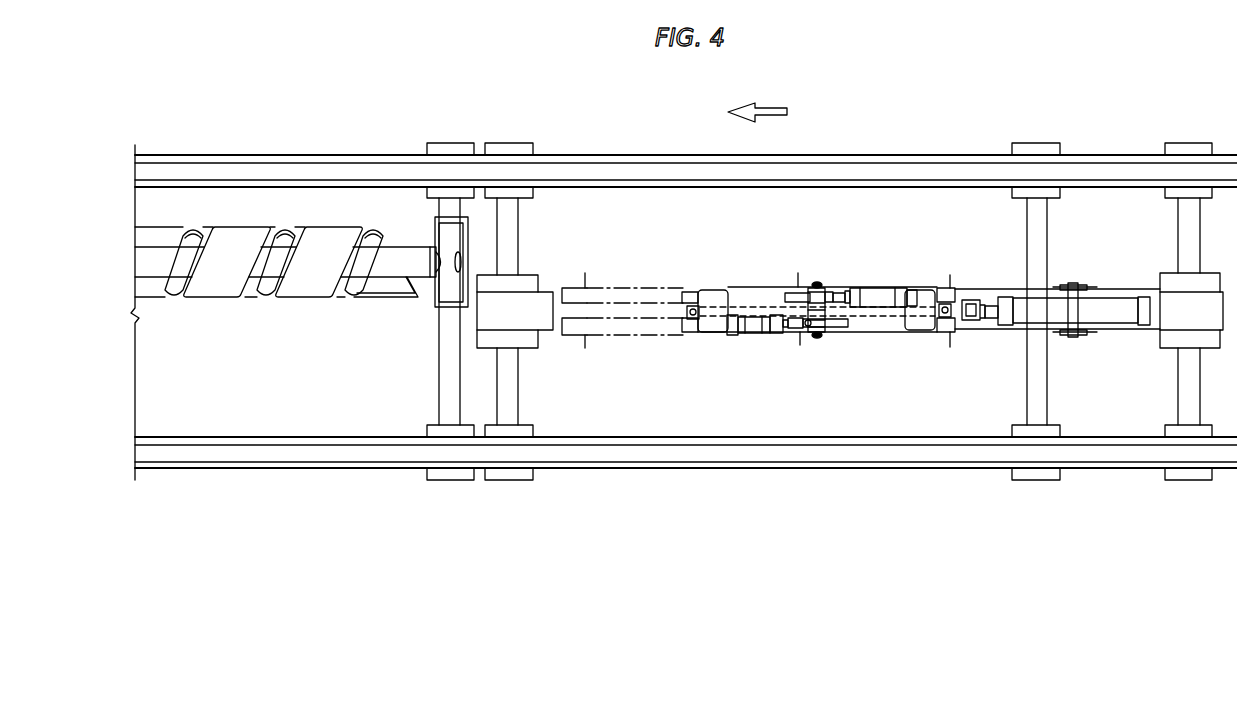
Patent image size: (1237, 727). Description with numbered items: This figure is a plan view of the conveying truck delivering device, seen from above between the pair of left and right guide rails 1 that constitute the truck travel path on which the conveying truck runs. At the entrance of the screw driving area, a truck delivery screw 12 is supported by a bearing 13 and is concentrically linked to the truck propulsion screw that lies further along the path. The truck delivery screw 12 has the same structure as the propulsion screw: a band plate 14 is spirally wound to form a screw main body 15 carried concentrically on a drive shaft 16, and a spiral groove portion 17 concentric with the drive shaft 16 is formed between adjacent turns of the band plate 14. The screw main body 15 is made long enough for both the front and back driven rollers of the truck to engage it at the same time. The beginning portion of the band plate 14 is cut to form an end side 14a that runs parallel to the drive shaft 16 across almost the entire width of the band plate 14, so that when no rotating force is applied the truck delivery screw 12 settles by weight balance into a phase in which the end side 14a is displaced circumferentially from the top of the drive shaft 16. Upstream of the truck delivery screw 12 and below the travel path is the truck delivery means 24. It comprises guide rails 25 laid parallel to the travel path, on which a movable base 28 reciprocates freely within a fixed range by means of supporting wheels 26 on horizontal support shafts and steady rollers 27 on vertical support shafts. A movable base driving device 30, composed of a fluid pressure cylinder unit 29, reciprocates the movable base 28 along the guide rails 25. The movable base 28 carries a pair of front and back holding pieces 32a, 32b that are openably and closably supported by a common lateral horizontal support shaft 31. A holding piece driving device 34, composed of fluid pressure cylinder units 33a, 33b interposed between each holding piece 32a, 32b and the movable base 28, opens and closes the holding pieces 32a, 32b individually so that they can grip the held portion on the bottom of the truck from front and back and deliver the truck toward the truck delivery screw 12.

The guide rails 1 is at (279, 168).
The truck delivery screw 12 is at (285, 235).
The bearing 13 is at (453, 240).
The band plate 14 is at (312, 290).
The end side 14a is at (383, 298).
The screw main body 15 is at (205, 302).
The drive shaft 16 is at (404, 256).
The spiral groove portion 17 is at (210, 228).
The truck delivery means 24 is at (742, 275).
The guide rails 25 is at (628, 293).
The supporting wheels 26 is at (694, 291).
The steady rollers 27 is at (690, 320).
The movable base 28 is at (878, 332).
The fluid pressure cylinder unit 29 is at (1110, 312).
The movable base driving device 30 is at (1057, 302).
The lateral horizontal support shaft 31 is at (818, 284).
The holding piece 32a is at (835, 327).
The holding piece 32b is at (797, 297).
The fluid pressure cylinder unit 33a is at (752, 333).
The fluid pressure cylinder unit 33b is at (882, 285).
The holding piece driving device 34 is at (782, 337).